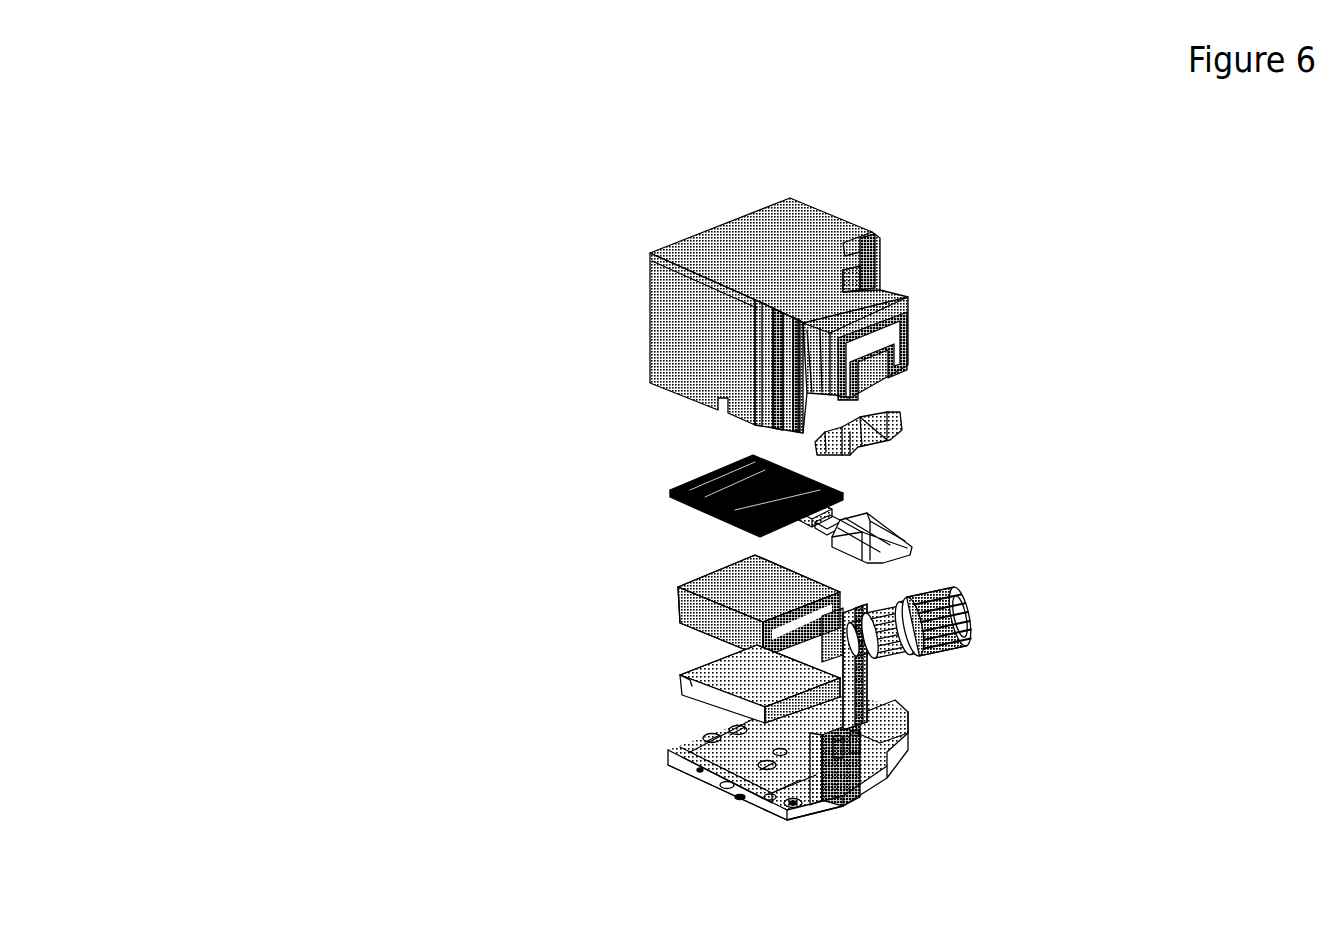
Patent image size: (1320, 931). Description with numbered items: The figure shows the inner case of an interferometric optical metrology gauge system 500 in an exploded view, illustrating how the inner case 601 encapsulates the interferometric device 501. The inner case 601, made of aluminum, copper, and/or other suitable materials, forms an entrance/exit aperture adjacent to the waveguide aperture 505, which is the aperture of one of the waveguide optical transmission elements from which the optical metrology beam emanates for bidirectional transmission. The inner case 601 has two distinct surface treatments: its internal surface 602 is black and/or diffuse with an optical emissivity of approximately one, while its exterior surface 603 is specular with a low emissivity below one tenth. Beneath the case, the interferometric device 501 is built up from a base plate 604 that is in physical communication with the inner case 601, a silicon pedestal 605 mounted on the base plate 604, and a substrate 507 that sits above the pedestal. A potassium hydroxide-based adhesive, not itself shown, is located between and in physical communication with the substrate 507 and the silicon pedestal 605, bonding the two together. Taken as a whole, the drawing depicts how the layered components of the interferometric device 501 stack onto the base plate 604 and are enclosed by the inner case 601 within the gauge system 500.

The interferometric optical metrology gauge system 500 is at (361, 214).
The interferometric device 501 is at (922, 491).
The waveguide aperture 505 is at (795, 470).
The substrate 507 is at (714, 512).
The inner case 601 is at (834, 241).
The internal surface 602 is at (856, 406).
The exterior surface 603 is at (733, 236).
The base plate 604 is at (684, 678).
The silicon pedestal 605 is at (683, 597).